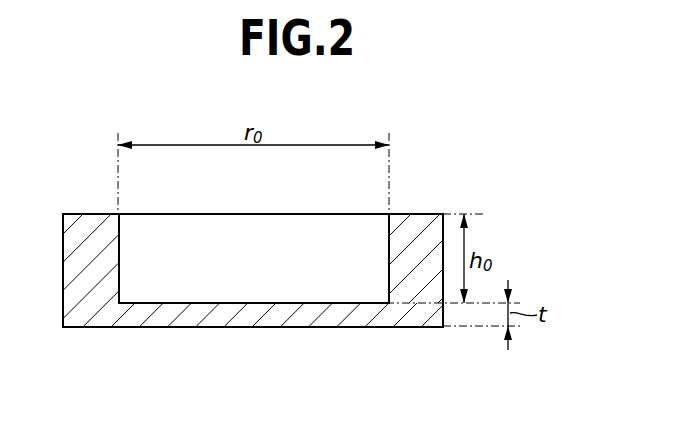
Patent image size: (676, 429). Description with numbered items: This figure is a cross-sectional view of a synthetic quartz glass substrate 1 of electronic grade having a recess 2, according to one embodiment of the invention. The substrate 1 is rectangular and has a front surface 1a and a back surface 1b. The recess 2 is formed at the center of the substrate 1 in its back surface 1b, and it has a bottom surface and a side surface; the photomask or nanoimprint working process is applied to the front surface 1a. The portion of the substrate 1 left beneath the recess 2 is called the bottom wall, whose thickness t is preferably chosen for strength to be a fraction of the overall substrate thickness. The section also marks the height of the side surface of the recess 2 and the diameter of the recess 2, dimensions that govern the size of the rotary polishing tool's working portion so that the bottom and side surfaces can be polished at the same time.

The synthetic quartz glass substrate 1 is at (78, 209).
The front surface 1a is at (272, 328).
The back surface 1b is at (410, 213).
The recess 2 is at (277, 250).